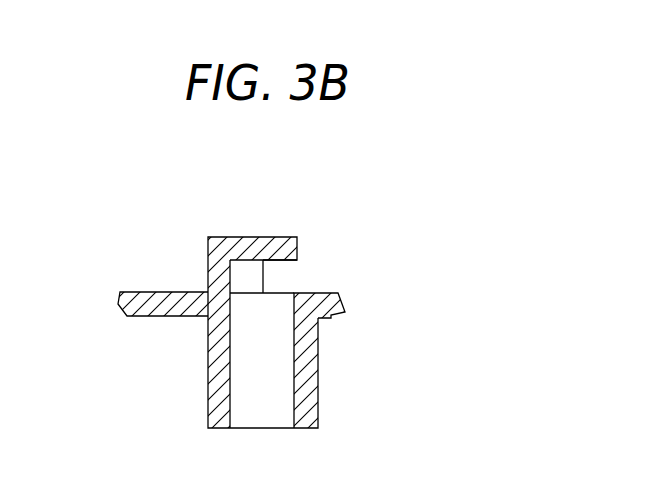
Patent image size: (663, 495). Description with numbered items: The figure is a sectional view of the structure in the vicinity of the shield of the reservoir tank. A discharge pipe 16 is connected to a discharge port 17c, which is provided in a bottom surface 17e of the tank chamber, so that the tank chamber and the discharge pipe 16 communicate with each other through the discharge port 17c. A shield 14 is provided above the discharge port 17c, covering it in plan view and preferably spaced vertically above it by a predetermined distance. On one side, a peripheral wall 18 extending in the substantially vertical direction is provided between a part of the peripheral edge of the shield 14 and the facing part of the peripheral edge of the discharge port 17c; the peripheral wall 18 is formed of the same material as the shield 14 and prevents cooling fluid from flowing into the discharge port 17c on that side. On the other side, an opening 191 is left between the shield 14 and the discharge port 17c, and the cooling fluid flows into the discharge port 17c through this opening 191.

The shield 14 is at (275, 237).
The opening 191 is at (305, 260).
The discharge port 17c is at (270, 308).
The bottom surface 17e is at (333, 318).
The discharge pipe 16 is at (322, 393).
The peripheral wall 18 is at (207, 265).